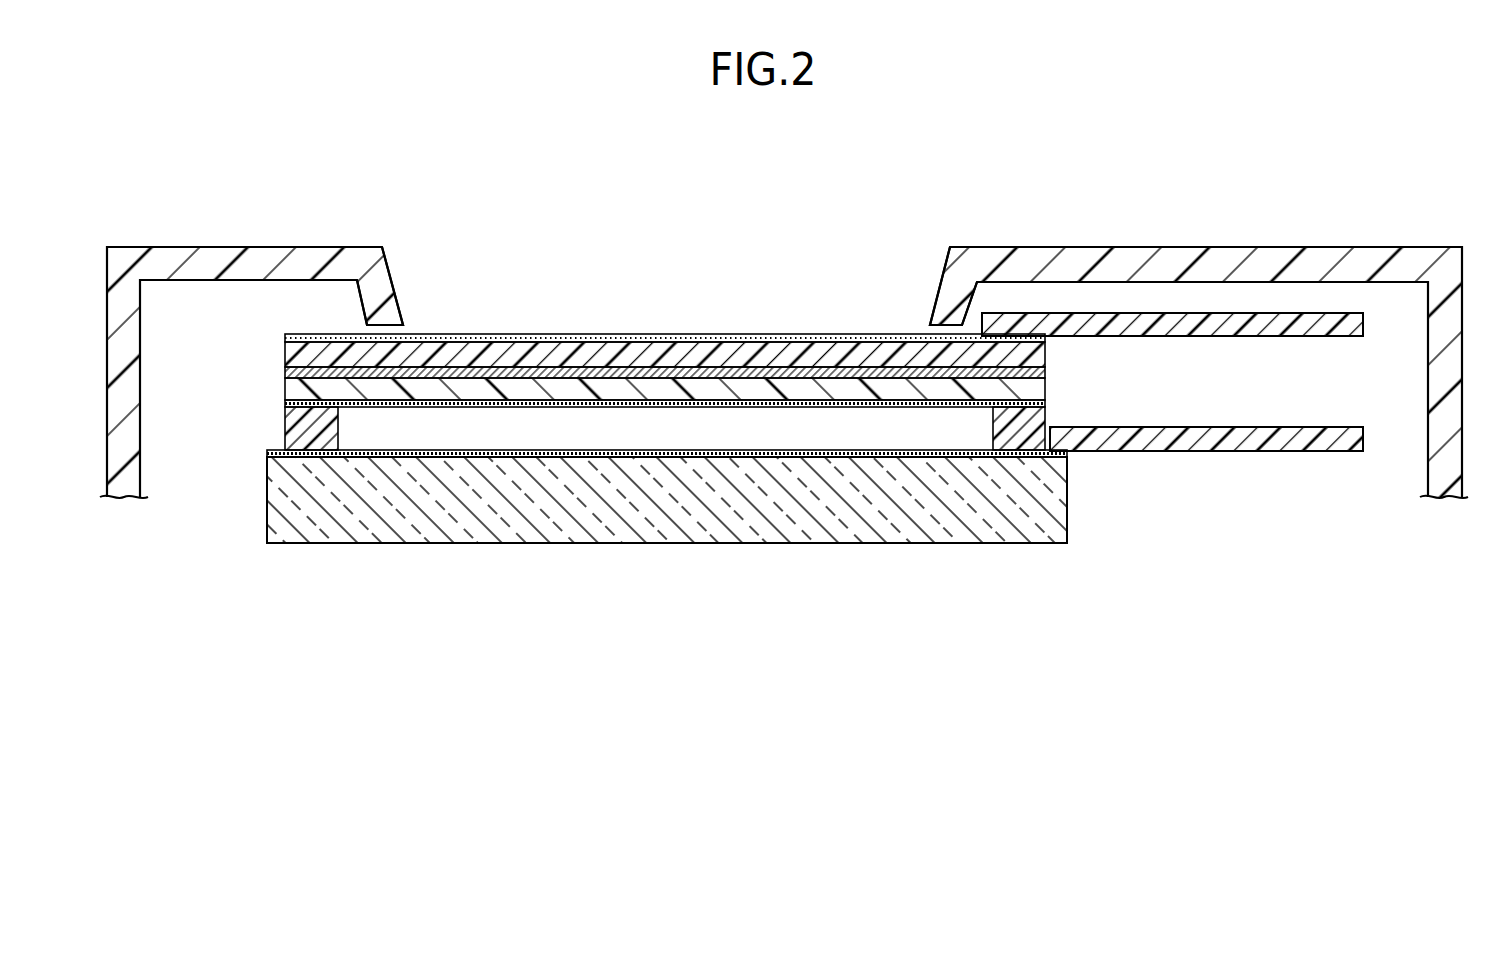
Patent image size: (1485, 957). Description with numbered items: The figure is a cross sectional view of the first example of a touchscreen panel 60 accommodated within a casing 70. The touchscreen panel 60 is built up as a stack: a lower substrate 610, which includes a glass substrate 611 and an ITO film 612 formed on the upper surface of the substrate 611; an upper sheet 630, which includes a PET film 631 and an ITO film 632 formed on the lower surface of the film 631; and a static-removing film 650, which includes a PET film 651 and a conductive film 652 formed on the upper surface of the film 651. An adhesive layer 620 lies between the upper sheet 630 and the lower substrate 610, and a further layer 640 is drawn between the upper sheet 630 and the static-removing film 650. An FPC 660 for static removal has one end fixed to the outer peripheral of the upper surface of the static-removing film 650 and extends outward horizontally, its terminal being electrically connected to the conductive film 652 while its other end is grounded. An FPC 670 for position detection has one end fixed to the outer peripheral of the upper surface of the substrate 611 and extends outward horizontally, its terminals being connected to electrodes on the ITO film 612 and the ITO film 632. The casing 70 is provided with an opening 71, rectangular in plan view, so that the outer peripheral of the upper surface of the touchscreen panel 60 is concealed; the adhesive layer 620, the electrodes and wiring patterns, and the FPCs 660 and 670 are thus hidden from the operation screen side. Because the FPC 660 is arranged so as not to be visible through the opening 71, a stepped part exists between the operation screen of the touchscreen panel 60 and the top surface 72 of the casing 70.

The touchscreen panel 60 is at (632, 290).
The casing 70 is at (298, 262).
The opening 71 is at (407, 325).
The top surface 72 is at (1112, 247).
The lower substrate 610 is at (605, 508).
The glass substrate 611 is at (200, 490).
The ITO film 612 is at (267, 455).
The adhesive layer 620 is at (285, 405).
The upper sheet 630 is at (594, 414).
The PET film 631 is at (285, 389).
The ITO film 632 is at (622, 428).
The adhesive layer 640 is at (285, 372).
The static-removing film 650 is at (594, 328).
The PET film 651 is at (285, 356).
The conductive film 652 is at (285, 337).
The FPC for static removal 660 is at (1219, 327).
The FPC for position detection 670 is at (1219, 442).